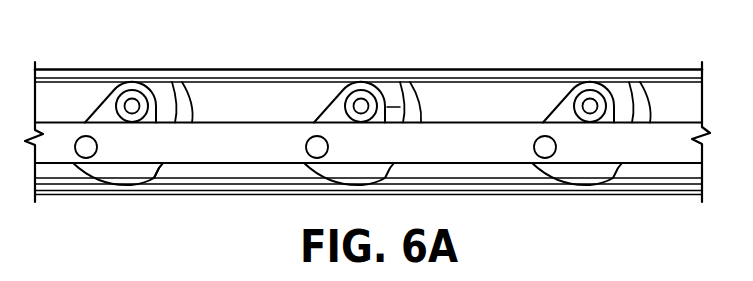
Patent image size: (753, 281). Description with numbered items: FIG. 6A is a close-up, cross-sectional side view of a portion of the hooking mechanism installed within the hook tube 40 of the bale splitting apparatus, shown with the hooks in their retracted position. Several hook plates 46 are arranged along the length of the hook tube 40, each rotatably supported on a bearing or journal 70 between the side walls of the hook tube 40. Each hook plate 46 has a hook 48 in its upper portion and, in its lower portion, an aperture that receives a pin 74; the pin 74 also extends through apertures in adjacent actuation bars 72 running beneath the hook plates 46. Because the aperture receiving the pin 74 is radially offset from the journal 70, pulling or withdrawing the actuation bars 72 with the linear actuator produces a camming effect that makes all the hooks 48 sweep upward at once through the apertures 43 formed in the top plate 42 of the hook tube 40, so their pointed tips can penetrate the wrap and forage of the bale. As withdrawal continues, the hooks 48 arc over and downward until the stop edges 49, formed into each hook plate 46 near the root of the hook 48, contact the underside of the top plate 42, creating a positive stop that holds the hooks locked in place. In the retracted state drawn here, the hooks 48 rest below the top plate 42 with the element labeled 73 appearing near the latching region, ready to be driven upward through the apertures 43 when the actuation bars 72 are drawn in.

The hook tube 40 is at (112, 45).
The top plate 42 is at (677, 72).
The apertures 43 is at (190, 57).
The hook plates 46 is at (122, 175).
The hook 48 is at (193, 102).
The stop edges 49 is at (160, 175).
The journals 70 is at (361, 106).
The actuation bars 72 is at (477, 148).
The latch member 73 is at (392, 106).
The pin 74 is at (308, 148).